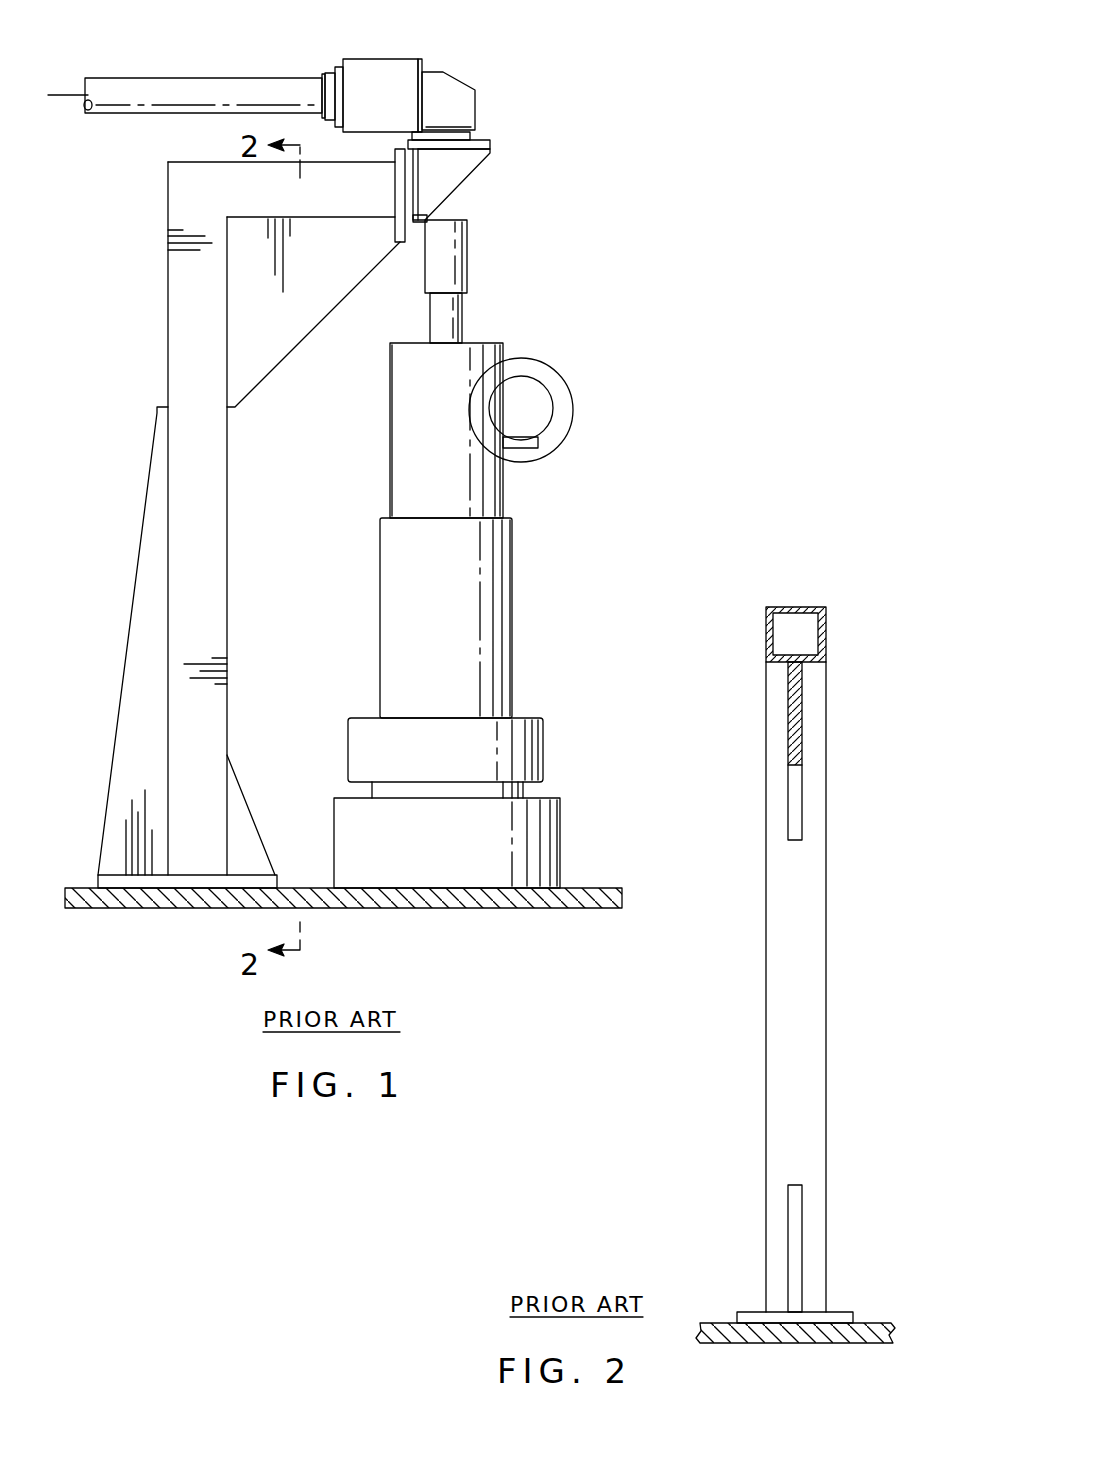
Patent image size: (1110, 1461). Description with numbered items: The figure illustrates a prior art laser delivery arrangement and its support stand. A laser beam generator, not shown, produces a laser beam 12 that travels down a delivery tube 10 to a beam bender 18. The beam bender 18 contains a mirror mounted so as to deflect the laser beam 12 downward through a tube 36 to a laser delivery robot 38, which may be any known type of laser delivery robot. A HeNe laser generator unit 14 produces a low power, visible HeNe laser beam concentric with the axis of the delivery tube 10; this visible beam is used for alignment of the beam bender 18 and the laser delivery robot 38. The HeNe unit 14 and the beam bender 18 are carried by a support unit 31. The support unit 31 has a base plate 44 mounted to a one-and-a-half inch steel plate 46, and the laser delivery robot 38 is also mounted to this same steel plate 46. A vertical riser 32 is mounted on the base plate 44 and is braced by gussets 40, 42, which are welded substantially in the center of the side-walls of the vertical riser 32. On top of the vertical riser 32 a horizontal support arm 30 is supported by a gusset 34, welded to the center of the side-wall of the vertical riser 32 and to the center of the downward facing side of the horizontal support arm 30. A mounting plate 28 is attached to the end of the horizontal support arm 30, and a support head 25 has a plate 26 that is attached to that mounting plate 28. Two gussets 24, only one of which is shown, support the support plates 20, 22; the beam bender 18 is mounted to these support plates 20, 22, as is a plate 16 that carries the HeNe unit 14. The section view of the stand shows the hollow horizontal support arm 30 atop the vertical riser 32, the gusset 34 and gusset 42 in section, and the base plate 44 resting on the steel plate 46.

In FIG. 1, the delivery tube 10 is at (138, 88).
In FIG. 1, the laser beam 12 is at (65, 95).
In FIG. 1, the HeNe laser generator unit 14 is at (380, 68).
In FIG. 1, the plate 16 is at (420, 62).
In FIG. 1, the beam bender 18 is at (448, 90).
In FIG. 1, the support plate 20 is at (470, 136).
In FIG. 1, the support plate 22 is at (490, 147).
In FIG. 1, the gusset 24 is at (480, 165).
In FIG. 1, the support head 25 is at (498, 168).
In FIG. 1, the plate 26 is at (415, 222).
In FIG. 1, the mounting plate 28 is at (398, 158).
In FIG. 1, the horizontal support arm 30 is at (220, 164).
In FIG. 2, the horizontal support arm 30 is at (790, 605).
In FIG. 1, the support unit 31 is at (150, 272).
In FIG. 1, the vertical riser 32 is at (185, 330).
In FIG. 2, the vertical riser 32 is at (815, 965).
In FIG. 1, the gusset 34 is at (292, 322).
In FIG. 2, the gusset 34 is at (805, 706).
In FIG. 1, the tube 36 is at (467, 248).
In FIG. 1, the laser delivery robot 38 is at (512, 618).
In FIG. 1, the gusset 40 is at (130, 605).
In FIG. 1, the gusset 42 is at (248, 811).
In FIG. 2, the gusset 42 is at (795, 1237).
In FIG. 1, the base plate 44 is at (276, 882).
In FIG. 2, the base plate 44 is at (845, 1315).
In FIG. 1, the steel plate 46 is at (592, 888).
In FIG. 2, the steel plate 46 is at (730, 1323).